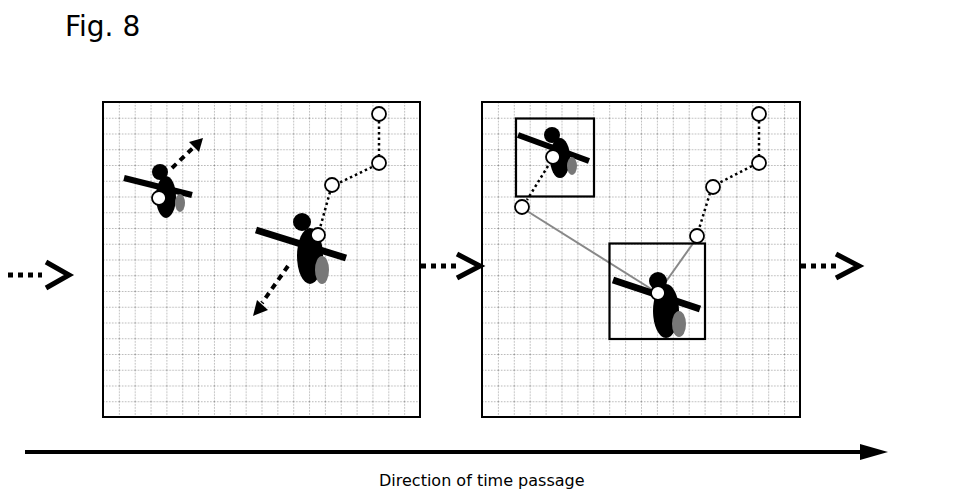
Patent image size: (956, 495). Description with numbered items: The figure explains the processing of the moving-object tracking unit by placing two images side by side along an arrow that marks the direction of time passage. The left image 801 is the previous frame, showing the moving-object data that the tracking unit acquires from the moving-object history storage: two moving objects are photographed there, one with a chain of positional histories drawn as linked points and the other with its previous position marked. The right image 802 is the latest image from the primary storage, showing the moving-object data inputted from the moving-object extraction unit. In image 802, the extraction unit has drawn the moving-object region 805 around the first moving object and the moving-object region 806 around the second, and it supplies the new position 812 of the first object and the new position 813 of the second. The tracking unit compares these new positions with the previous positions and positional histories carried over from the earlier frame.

The image 801 is at (336, 102).
The image 802 is at (726, 102).
The moving-object region 805 is at (597, 155).
The moving-object region 806 is at (705, 327).
The position 812 is at (545, 160).
The position 813 is at (652, 302).